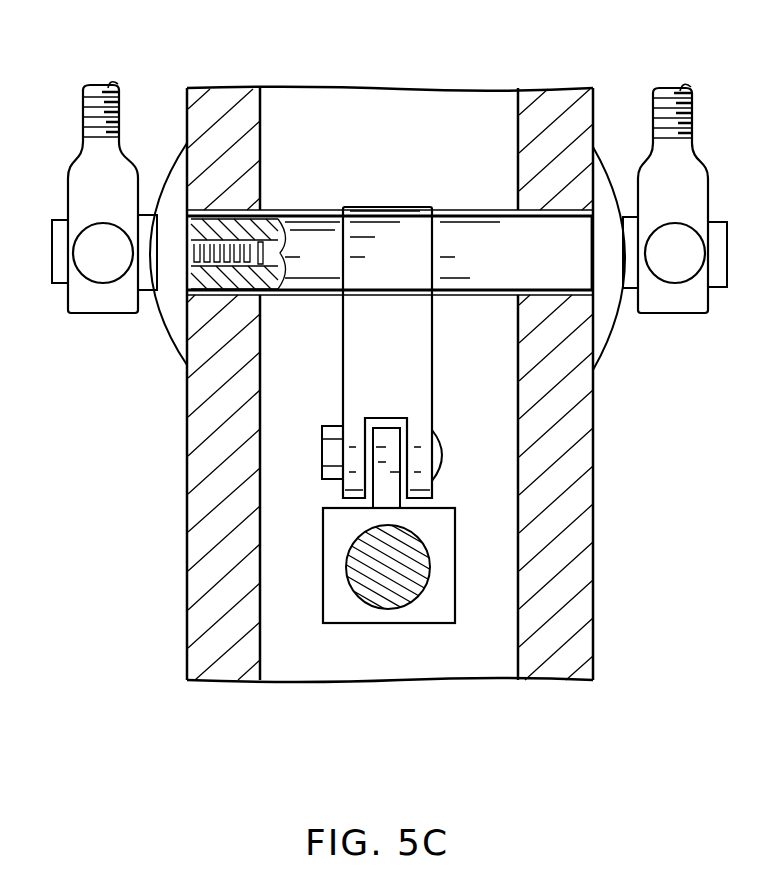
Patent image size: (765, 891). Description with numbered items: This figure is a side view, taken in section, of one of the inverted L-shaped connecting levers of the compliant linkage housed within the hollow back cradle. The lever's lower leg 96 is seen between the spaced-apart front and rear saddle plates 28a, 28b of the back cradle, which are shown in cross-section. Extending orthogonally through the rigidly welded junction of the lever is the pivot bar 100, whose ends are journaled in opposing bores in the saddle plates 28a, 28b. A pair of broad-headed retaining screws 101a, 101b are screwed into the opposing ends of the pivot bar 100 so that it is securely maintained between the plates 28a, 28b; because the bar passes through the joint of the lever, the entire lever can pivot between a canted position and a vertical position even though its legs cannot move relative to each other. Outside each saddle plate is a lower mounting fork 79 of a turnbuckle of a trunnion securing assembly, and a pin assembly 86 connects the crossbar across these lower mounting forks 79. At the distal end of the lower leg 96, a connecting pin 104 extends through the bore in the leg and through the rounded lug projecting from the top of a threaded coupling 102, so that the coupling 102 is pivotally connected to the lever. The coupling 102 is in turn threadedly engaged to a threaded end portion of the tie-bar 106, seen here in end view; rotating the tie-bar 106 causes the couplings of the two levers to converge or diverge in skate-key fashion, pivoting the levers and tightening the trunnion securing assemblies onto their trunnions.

The front saddle plate 28a is at (197, 542).
The rear saddle plate 28b is at (583, 515).
The lower mounting fork 79 is at (112, 204).
The pin assembly 86 is at (97, 273).
The lower leg 96 is at (388, 358).
The pivot bar 100 is at (502, 262).
The broad-headed retaining screw 101a is at (597, 157).
The broad-headed retaining screw 101b is at (176, 173).
The threaded coupling 102 is at (442, 535).
The connecting pin 104 is at (438, 447).
The tie-bar 106 is at (388, 585).